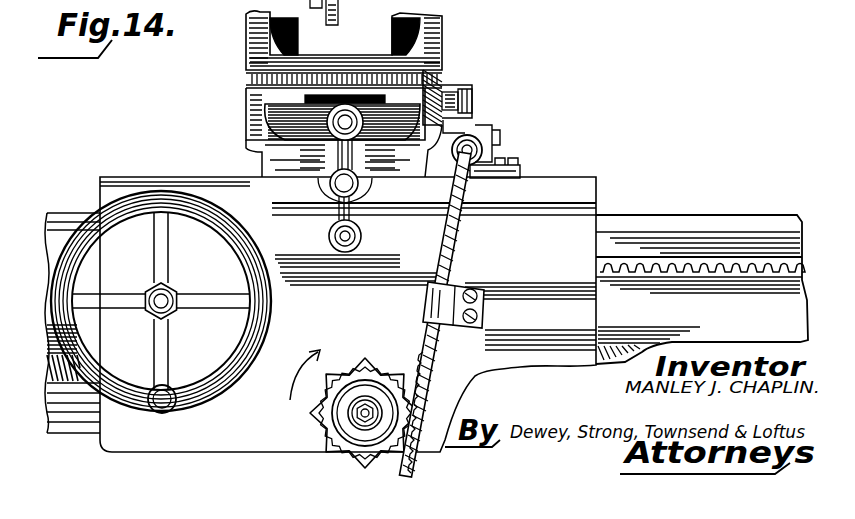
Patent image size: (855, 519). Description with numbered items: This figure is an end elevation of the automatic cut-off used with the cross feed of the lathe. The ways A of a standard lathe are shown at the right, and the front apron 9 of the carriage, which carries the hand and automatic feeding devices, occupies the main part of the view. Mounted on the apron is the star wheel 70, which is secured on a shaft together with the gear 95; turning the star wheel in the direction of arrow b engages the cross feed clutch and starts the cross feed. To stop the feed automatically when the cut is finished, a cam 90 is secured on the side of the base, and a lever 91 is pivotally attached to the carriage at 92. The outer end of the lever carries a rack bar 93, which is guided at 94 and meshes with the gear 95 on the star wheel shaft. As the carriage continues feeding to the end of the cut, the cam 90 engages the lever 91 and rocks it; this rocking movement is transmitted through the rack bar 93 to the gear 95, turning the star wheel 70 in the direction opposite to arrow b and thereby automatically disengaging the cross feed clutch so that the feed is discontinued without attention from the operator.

The front apron 9 is at (348, 314).
The star wheel 70 is at (333, 425).
The cam 90 is at (468, 92).
The lever 91 is at (470, 136).
The pivot attachment 92 is at (494, 137).
The rack bar 93 is at (449, 236).
The guide 94 is at (464, 292).
The gear 95 is at (370, 358).
The ways A is at (702, 289).
The arrow b is at (305, 371).